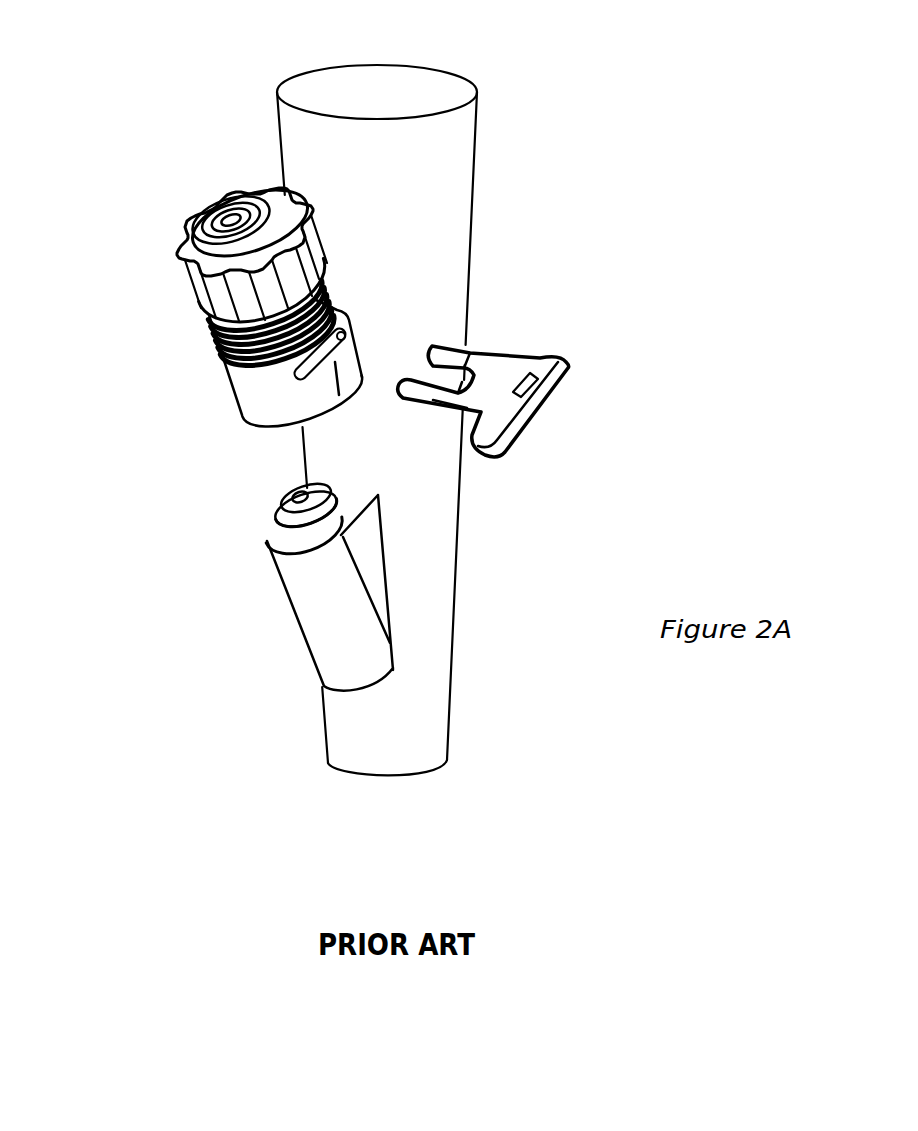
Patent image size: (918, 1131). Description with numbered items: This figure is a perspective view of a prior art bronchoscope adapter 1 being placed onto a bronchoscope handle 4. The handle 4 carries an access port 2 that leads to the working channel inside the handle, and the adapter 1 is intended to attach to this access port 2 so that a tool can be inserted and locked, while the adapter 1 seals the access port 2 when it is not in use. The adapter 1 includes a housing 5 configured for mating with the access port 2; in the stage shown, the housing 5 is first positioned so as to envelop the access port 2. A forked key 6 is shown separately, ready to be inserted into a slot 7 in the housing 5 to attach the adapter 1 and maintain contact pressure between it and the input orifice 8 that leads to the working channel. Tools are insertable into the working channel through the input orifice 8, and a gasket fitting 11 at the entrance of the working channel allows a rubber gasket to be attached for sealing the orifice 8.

The bronchoscope adapter 1 is at (150, 330).
The access port 2 is at (210, 576).
The bronchoscope handle 4 is at (527, 72).
The housing 5 is at (373, 328).
The forked key 6 is at (557, 350).
The slot 7 is at (350, 333).
The input orifice 8 is at (298, 495).
The gasket fitting 11 is at (270, 512).